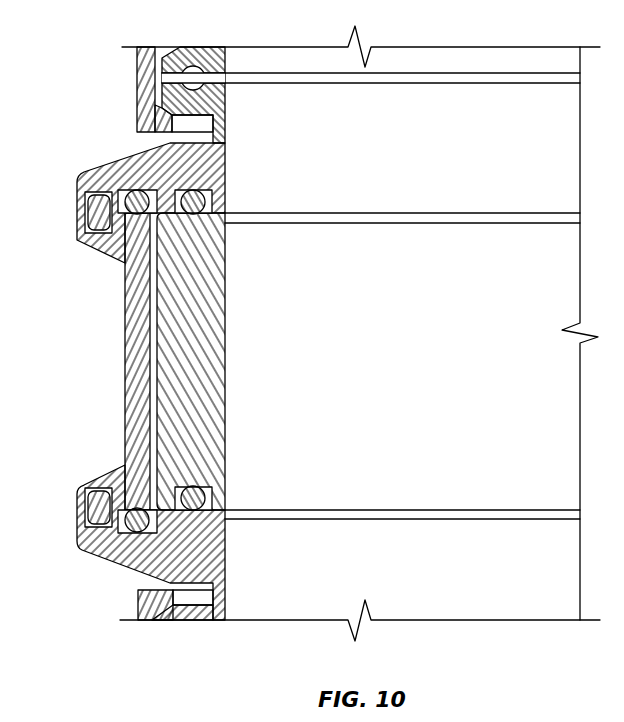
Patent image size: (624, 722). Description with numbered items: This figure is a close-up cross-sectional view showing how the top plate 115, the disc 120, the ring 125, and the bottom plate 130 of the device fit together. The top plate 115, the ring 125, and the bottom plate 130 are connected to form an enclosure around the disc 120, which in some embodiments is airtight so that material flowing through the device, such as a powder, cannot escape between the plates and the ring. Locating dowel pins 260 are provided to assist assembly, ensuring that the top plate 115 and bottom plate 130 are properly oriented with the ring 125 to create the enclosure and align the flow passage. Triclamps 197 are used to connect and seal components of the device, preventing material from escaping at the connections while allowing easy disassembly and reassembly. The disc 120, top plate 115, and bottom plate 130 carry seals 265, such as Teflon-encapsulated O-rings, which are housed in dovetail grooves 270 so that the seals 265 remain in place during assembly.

The top plate 115 is at (113, 165).
The disc 120 is at (177, 380).
The ring 125 is at (132, 293).
The bottom plate 130 is at (157, 562).
The triclamps 197 is at (143, 90).
The locating dowel pins 260 is at (95, 205).
The seals 265 is at (192, 190).
The dovetail grooves 270 is at (214, 192).